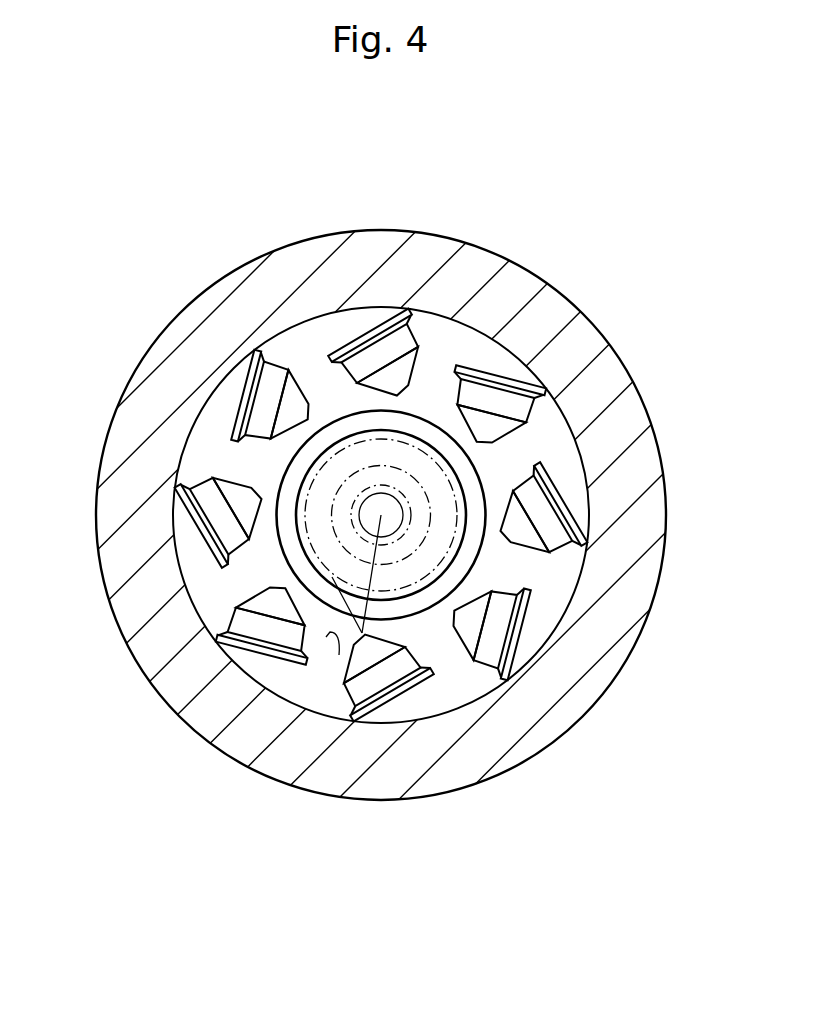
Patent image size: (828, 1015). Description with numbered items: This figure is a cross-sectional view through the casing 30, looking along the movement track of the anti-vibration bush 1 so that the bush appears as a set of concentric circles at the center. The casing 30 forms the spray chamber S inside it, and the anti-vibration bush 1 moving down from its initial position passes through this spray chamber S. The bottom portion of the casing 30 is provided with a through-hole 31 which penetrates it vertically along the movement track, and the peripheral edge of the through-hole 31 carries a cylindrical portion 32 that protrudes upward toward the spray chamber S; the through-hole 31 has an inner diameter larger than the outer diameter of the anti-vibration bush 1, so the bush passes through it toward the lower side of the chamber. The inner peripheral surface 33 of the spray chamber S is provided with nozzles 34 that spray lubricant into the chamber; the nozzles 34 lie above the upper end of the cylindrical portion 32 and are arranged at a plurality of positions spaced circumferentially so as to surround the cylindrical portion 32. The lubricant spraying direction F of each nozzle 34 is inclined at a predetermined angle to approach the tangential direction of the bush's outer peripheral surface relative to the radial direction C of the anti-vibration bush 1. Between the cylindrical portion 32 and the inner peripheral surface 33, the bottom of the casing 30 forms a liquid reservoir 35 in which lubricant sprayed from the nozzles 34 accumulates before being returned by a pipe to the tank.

The anti-vibration bush 1 is at (450, 545).
The casing 30 is at (550, 302).
The through-hole 31 is at (300, 492).
The cylindrical portion 32 is at (290, 470).
The inner peripheral surface 33 is at (566, 580).
The nozzle 34 is at (345, 373).
The liquid reservoir 35 is at (339, 655).
The spray chamber S is at (440, 348).
The lubricant spraying direction F is at (332, 577).
The radial direction C is at (372, 568).